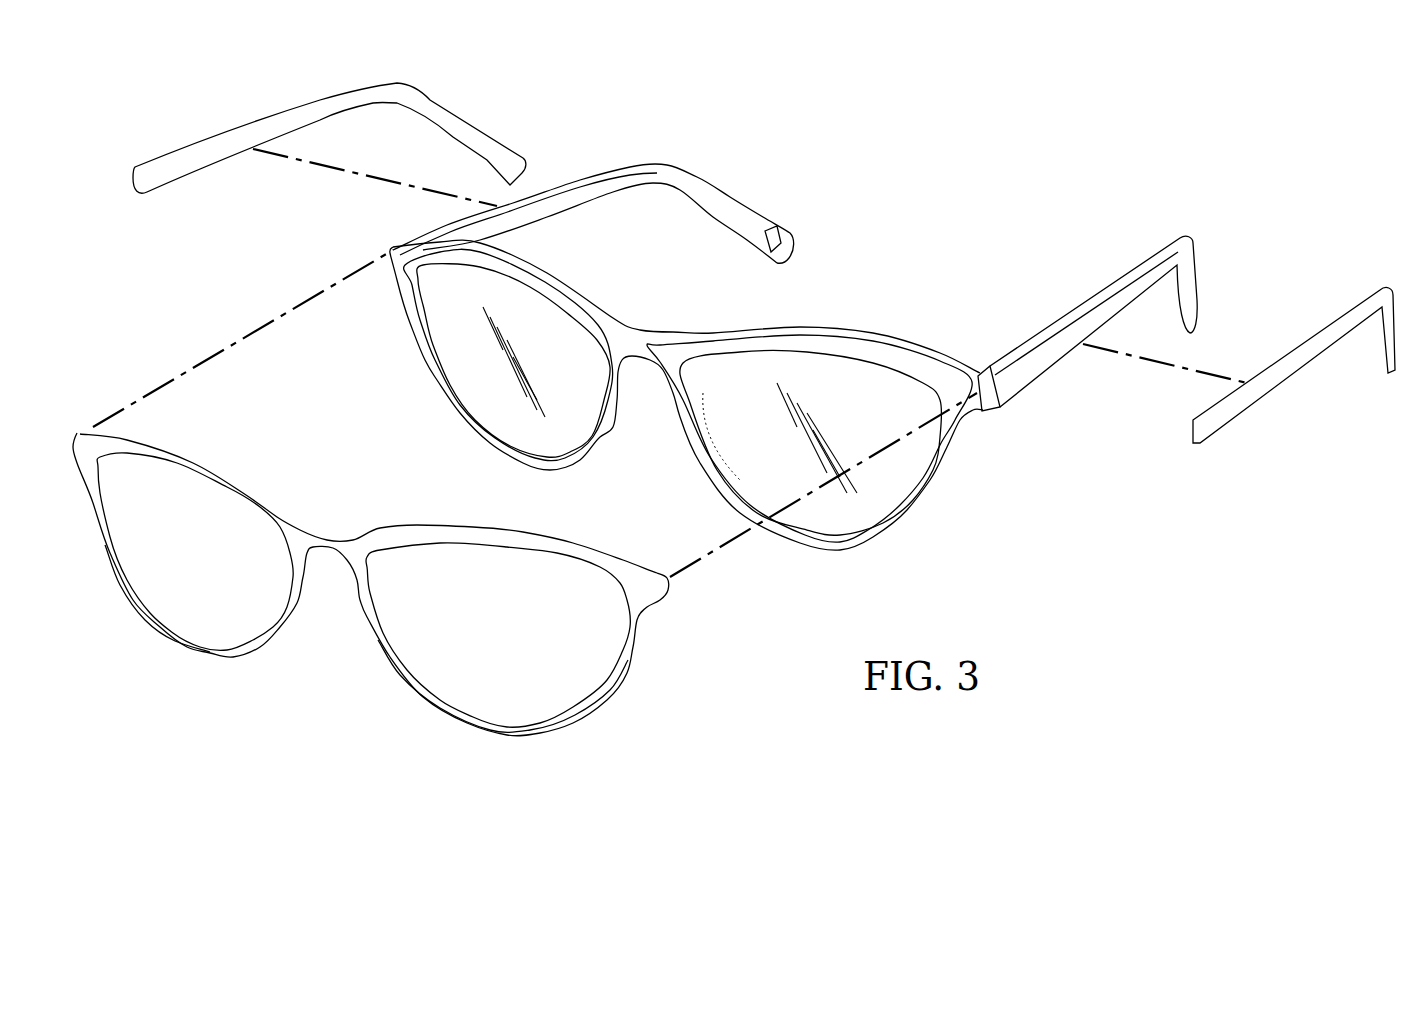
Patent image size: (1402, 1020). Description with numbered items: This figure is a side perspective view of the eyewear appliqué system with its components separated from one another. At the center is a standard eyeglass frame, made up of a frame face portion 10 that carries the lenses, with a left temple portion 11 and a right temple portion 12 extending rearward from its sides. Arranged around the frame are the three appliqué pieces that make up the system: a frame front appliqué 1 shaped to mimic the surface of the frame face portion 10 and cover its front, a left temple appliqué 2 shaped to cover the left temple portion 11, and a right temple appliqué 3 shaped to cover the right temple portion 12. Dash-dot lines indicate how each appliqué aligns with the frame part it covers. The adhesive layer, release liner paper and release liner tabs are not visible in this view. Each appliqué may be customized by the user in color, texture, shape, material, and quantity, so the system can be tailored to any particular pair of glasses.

The frame front appliqué 1 is at (623, 672).
The left temple appliqué 2 is at (1305, 363).
The right temple appliqué 3 is at (287, 111).
The frame face portion 10 is at (940, 477).
The left temple portion 11 is at (1130, 273).
The right temple portion 12 is at (731, 191).